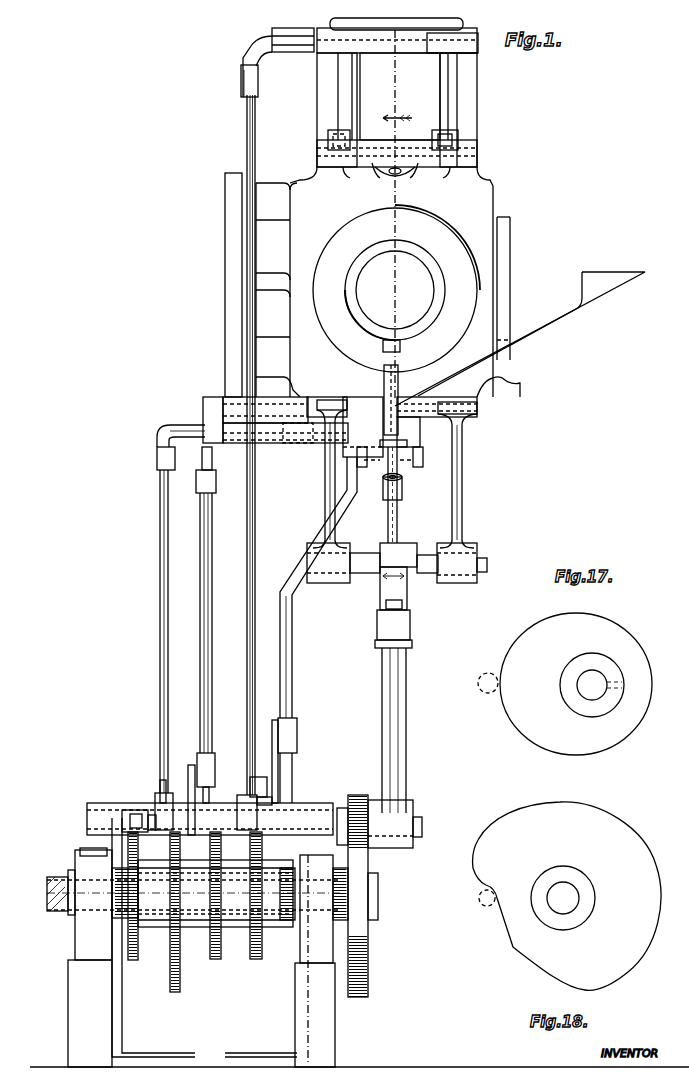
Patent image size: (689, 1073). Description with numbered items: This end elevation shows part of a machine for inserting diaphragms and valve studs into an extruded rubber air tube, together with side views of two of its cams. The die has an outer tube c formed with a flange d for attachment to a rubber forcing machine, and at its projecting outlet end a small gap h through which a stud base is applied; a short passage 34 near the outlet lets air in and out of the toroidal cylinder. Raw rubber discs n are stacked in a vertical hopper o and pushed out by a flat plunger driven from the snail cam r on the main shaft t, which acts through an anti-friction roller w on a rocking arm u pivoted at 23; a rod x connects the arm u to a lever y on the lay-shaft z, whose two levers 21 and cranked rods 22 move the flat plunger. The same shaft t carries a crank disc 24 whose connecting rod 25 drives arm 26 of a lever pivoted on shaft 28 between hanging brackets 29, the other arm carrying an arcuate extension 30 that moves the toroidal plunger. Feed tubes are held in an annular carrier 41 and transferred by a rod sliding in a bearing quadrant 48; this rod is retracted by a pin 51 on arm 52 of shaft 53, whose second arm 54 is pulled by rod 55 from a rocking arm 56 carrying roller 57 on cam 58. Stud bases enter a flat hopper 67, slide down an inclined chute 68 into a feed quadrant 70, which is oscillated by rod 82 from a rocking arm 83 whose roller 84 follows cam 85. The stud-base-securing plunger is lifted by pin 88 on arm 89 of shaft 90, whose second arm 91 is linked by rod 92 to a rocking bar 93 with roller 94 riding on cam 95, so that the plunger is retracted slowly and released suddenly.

In FIG. 1, the lever 21 is at (357, 78).
In FIG. 1, the rod 22 is at (343, 137).
In FIG. 1, the short passage 34 is at (410, 172).
In FIG. 1, the vertical guide or hopper o is at (460, 88).
In FIG. 1, the lay-shaft z is at (394, 215).
In FIG. 1, the disc of raw rubber n is at (397, 104).
In FIG. 1, the lever y is at (265, 64).
In FIG. 1, the flange d is at (238, 175).
In FIG. 1, the outer tube of the die c is at (410, 252).
In FIG. 1, the gap h is at (400, 343).
In FIG. 1, the flat hopper 67 is at (588, 278).
In FIG. 1, the flat inclined chute 68 is at (568, 318).
In FIG. 1, the feed quadrant 70 is at (487, 378).
In FIG. 1, the shaft 53 is at (290, 400).
In FIG. 1, the second arm 54 is at (188, 425).
In FIG. 1, the arm 52 is at (407, 435).
In FIG. 1, the pin 51 is at (413, 470).
In FIG. 1, the hanging bracket 29 is at (325, 517).
In FIG. 1, the bearing quadrant 48 is at (402, 492).
In FIG. 1, the arcuate extension 30 is at (397, 533).
In FIG. 1, the pin 88 is at (385, 478).
In FIG. 1, the arm 89 is at (350, 470).
In FIG. 1, the shaft 90 is at (287, 445).
In FIG. 1, the shaft 28 is at (424, 573).
In FIG. 1, the arm of lever 26 is at (403, 612).
In FIG. 1, the annular carrier 41 is at (394, 616).
In FIG. 1, the connecting rod 25 is at (393, 723).
In FIG. 1, the crank disc 24 is at (358, 858).
In FIG. 1, the shaft t is at (60, 880).
In FIG. 1, the anti-friction roller w is at (215, 893).
In FIG. 1, the rocking arm u is at (263, 894).
In FIG. 1, the cam 58 is at (135, 962).
In FIG. 1, the cam 95 is at (178, 993).
In FIG. 18, the cam 95 is at (585, 813).
In FIG. 1, the cam r is at (216, 961).
In FIG. 1, the cam 85 is at (256, 961).
In FIG. 17, the cam 85 is at (597, 625).
In FIG. 1, the pivot 23 is at (115, 810).
In FIG. 1, the rocking arm 56 is at (142, 817).
In FIG. 1, the antifriction roller 57 is at (150, 823).
In FIG. 1, the rod 55 is at (160, 573).
In FIG. 1, the second arm 91 is at (205, 455).
In FIG. 1, the rod 92 is at (200, 520).
In FIG. 1, the rod x is at (243, 603).
In FIG. 1, the rocking bar 93 is at (190, 763).
In FIG. 1, the antifriction roller 94 is at (170, 800).
In FIG. 18, the antifriction roller 94 is at (487, 907).
In FIG. 1, the rod 82 is at (283, 660).
In FIG. 1, the antifriction roller 84 is at (270, 780).
In FIG. 17, the antifriction roller 84 is at (487, 697).
In FIG. 1, the rocking arm 83 is at (273, 794).